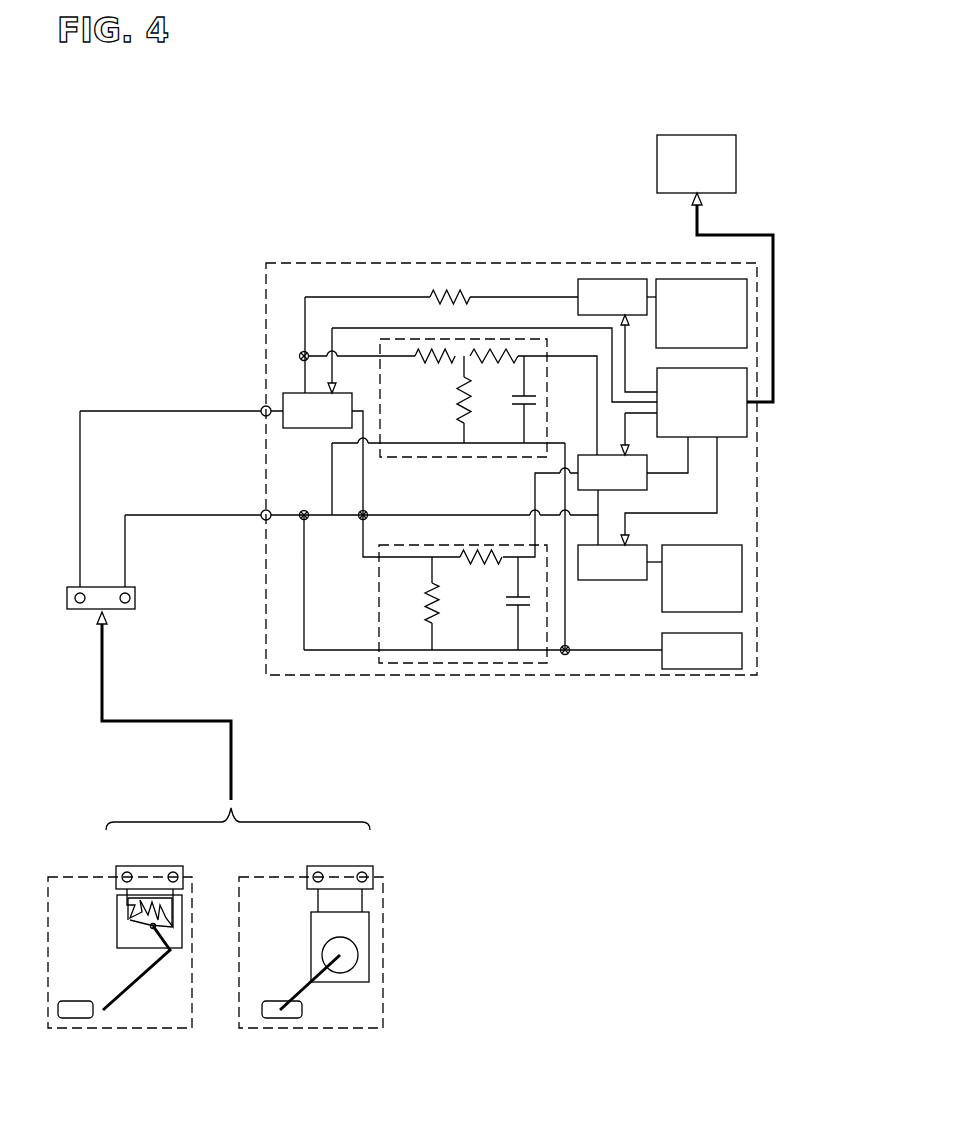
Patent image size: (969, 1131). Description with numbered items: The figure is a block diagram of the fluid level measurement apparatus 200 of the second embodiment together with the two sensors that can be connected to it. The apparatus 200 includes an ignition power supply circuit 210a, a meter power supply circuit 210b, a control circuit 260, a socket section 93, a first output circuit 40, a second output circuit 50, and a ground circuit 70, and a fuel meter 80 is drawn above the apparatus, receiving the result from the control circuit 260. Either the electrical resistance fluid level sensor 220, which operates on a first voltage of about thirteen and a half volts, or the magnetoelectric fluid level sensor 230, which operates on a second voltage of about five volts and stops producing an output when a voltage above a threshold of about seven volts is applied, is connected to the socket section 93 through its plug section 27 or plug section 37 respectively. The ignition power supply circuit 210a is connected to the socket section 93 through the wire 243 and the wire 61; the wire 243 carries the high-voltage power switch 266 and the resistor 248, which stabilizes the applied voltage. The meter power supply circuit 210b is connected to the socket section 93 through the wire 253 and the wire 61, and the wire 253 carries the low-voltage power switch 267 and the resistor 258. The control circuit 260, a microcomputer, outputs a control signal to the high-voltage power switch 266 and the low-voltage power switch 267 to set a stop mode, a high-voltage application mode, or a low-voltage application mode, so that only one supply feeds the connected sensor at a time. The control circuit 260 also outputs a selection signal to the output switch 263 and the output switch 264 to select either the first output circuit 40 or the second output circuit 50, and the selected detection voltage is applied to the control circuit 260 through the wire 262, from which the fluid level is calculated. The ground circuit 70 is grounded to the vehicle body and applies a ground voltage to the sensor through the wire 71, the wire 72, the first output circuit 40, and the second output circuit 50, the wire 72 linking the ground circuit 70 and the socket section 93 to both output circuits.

The fluid level measurement apparatus 200 is at (183, 205).
The first output circuit 40 is at (403, 337).
The resistor 248 is at (438, 290).
The wire 243 is at (500, 297).
The high-voltage power switch 266 is at (593, 279).
The ignition power supply circuit 210a is at (690, 279).
The fuel meter 80 is at (736, 165).
The output switch 263 is at (297, 392).
The wire 61 is at (224, 409).
The wire 71 is at (224, 513).
The socket section 93 is at (135, 593).
The control circuit 260 is at (747, 418).
The wire 262 is at (688, 453).
The output switch 264 is at (637, 490).
The meter power supply circuit 210b is at (710, 545).
The low-voltage power switch 267 is at (620, 580).
The ground circuit 70 is at (742, 645).
The wire 72 is at (608, 650).
The second output circuit 50 is at (523, 665).
The wire 253 is at (448, 460).
The resistor 258 is at (513, 460).
The plug section 27 is at (155, 866).
The plug section 37 is at (347, 866).
The electrical resistance fluid level sensor 220 is at (137, 970).
The magnetoelectric fluid level sensor 230 is at (328, 970).